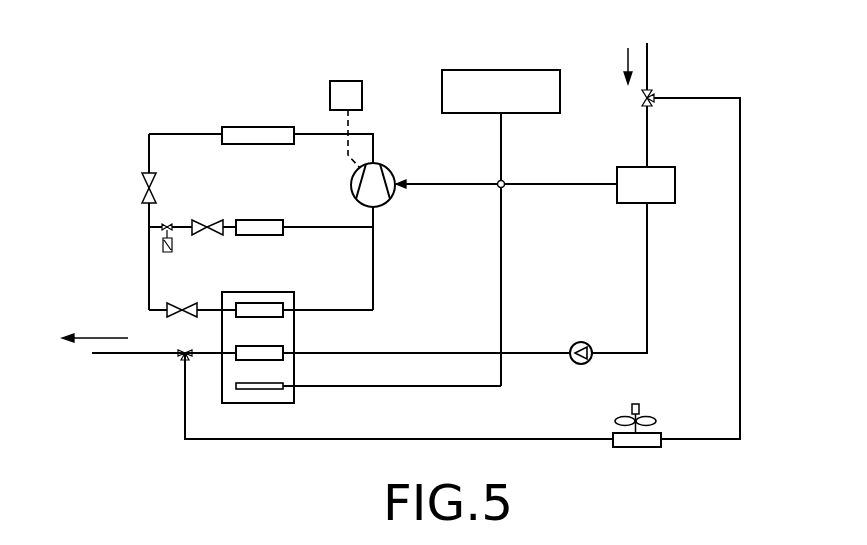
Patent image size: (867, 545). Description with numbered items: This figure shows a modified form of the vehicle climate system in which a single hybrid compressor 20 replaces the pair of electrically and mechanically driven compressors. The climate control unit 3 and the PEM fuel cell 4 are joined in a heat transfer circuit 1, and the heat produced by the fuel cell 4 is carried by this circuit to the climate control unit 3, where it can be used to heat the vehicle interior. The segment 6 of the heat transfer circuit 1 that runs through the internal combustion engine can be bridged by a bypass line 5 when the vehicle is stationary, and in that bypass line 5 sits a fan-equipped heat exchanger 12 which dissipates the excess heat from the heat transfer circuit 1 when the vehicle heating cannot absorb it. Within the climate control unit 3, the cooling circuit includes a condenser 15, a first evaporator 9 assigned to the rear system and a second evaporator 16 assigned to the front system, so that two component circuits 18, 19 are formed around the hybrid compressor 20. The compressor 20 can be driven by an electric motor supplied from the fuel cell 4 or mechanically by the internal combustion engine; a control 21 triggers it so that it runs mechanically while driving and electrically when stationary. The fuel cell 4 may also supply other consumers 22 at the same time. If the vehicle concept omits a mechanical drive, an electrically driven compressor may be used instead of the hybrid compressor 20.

The heat transfer circuit 1 is at (647, 283).
The climate control unit 3 is at (278, 292).
The PEM fuel cell 4 is at (675, 180).
The bypass line 5 is at (740, 280).
The segment of the heat transfer circuit 6 is at (138, 353).
The evaporator 9 is at (252, 303).
The heat exchanger 12 is at (637, 447).
The condenser 15 is at (272, 127).
The second evaporator 16 is at (278, 220).
The component circuit 18 is at (392, 283).
The component circuit 19 is at (229, 188).
The hybrid compressor 20 is at (390, 166).
The control 21 is at (348, 81).
The other consumers 22 is at (492, 70).